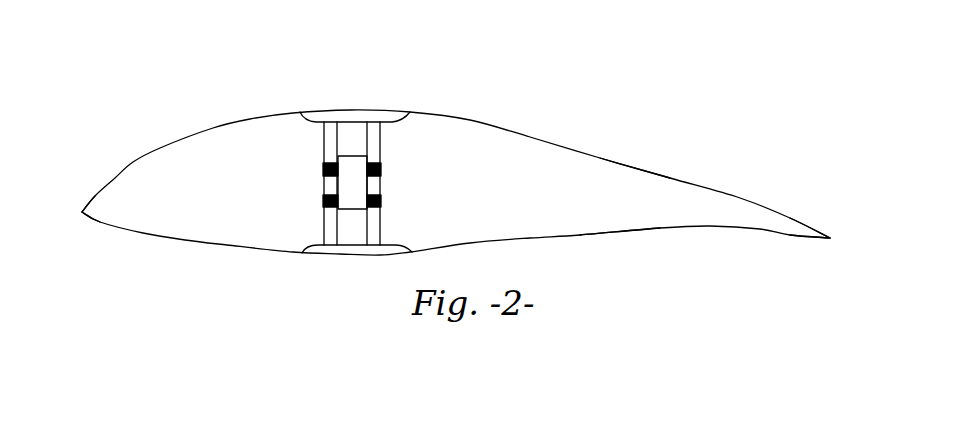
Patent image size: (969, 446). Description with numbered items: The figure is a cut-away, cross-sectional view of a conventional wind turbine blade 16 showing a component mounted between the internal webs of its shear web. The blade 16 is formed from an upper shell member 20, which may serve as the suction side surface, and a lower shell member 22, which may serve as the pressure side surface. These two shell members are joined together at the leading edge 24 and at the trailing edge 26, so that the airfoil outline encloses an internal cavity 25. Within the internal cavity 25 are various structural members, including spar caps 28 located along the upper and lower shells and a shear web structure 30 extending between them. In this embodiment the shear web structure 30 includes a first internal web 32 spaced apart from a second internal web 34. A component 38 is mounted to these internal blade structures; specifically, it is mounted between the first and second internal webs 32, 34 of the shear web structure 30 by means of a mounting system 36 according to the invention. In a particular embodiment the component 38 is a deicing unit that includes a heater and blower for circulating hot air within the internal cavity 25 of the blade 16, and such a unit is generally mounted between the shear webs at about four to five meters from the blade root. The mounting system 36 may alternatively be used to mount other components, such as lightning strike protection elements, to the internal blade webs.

The wind turbine blade 16 is at (462, 156).
The upper shell member 20 is at (215, 130).
The lower shell member 22 is at (217, 247).
The leading edge 24 is at (82, 212).
The internal cavity 25 is at (604, 180).
The trailing edge 26 is at (830, 238).
The spar caps 28 is at (352, 120).
The shear web structure 30 is at (357, 183).
The first internal web 32 is at (323, 228).
The second internal web 34 is at (382, 143).
The mounting system 36 is at (318, 200).
The component 38 is at (343, 192).